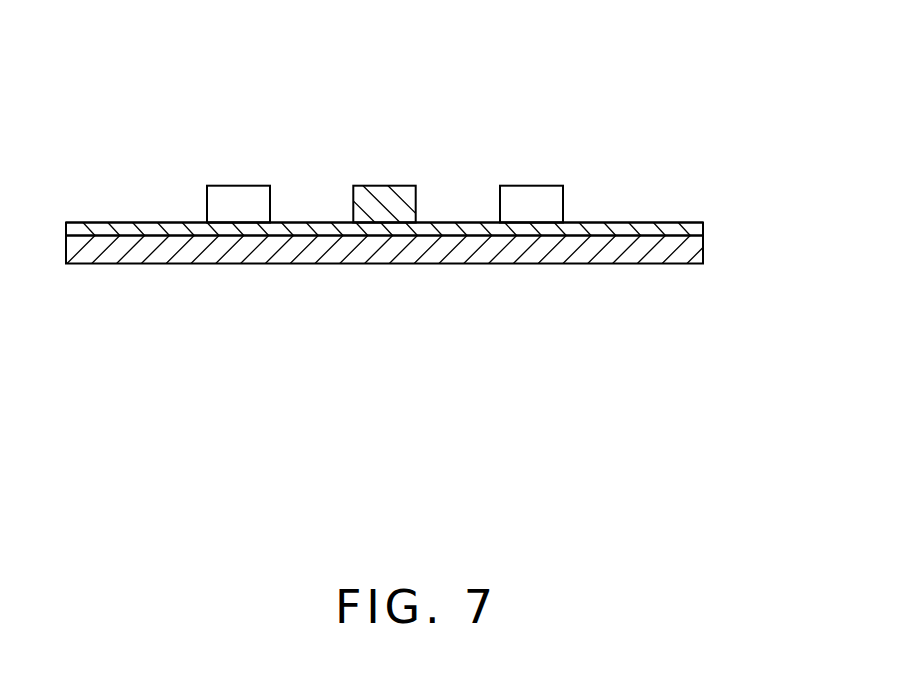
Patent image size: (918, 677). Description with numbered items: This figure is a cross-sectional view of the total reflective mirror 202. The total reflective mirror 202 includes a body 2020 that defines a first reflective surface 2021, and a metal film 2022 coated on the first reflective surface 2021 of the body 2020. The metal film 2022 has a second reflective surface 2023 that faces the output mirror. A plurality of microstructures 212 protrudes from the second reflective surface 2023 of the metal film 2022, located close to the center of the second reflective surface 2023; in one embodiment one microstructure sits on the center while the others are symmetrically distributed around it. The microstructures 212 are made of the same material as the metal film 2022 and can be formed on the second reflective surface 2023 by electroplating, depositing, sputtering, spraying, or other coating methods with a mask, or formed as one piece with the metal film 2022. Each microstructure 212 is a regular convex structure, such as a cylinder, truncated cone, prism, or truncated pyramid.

The total reflective mirror 202 is at (147, 59).
The body 2020 is at (682, 257).
The first reflective surface 2021 is at (600, 236).
The metal film 2022 is at (709, 226).
The second reflective surface 2023 is at (663, 222).
The microstructures 212 is at (390, 197).